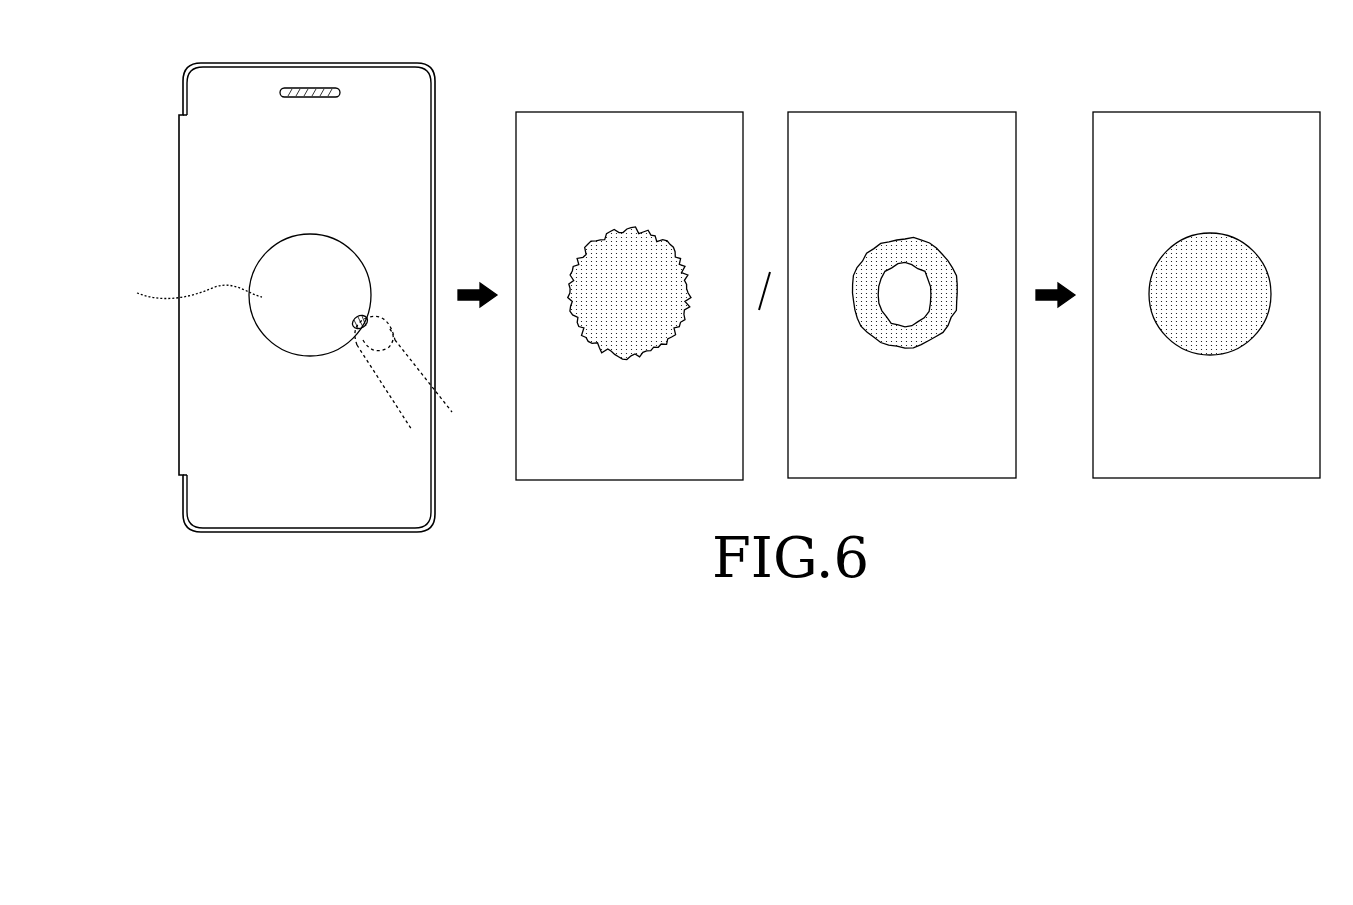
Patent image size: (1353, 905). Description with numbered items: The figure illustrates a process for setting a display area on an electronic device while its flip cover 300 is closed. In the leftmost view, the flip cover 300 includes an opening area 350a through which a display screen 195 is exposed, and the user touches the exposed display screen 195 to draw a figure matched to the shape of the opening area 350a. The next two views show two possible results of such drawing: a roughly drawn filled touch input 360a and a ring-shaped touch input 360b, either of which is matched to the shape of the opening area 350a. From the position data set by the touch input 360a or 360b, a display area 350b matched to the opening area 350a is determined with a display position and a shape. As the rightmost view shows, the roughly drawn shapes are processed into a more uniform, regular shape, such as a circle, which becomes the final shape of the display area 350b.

The flip cover 300 is at (307, 70).
The display screen 195 is at (1210, 70).
The opening area 350a is at (308, 352).
The touch input 360a is at (632, 346).
The touch input 360b is at (910, 343).
The display area 350b is at (1213, 345).